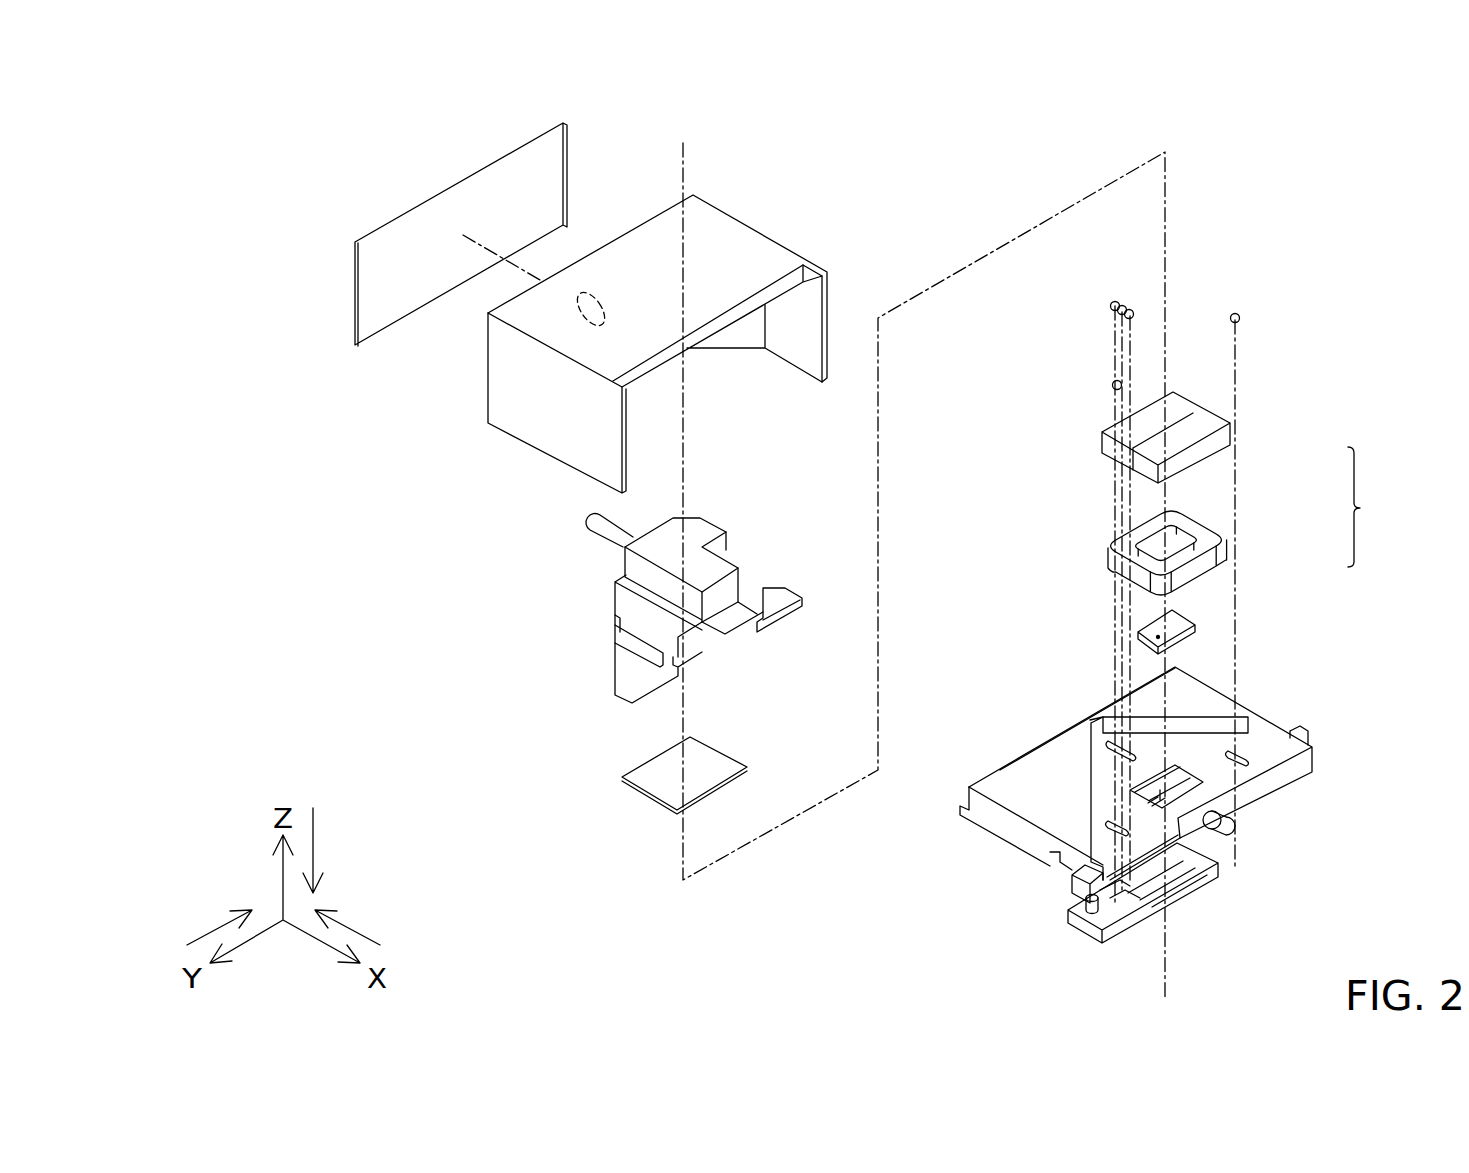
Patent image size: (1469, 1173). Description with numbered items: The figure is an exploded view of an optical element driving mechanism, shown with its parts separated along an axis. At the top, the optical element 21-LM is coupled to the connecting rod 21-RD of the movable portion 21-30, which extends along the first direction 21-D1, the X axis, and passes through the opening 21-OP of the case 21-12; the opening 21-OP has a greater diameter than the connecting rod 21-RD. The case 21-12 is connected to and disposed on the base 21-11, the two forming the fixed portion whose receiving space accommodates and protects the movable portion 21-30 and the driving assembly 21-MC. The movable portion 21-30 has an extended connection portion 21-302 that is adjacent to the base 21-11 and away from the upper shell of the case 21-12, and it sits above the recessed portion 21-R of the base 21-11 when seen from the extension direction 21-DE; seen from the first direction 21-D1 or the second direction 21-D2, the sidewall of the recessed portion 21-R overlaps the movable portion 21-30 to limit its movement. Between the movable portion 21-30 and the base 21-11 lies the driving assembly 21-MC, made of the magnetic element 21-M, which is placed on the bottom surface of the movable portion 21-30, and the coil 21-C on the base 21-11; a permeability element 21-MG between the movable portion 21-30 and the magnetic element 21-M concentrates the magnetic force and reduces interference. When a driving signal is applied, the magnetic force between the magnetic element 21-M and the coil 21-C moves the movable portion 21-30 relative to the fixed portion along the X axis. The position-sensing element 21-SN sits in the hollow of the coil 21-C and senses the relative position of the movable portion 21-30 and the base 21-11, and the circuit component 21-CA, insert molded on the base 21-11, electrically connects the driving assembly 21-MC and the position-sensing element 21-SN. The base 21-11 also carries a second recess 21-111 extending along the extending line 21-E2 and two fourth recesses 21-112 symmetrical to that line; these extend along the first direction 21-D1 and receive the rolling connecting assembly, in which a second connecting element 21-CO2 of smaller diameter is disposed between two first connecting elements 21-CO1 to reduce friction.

The optical element 21-LM is at (472, 208).
The opening 21-OP is at (572, 322).
The case 21-12 is at (542, 428).
The connecting rod 21-RD is at (603, 529).
The movable portion 21-30 is at (628, 672).
The extended connection portion 21-302 is at (780, 613).
The permeability element 21-MG is at (660, 780).
The first connecting element 21-CO1 is at (1111, 307).
The second connecting element 21-CO2 is at (1119, 314).
The magnetic element 21-M is at (1190, 458).
The driving assembly 21-MC is at (1404, 507).
The coil 21-C is at (1200, 551).
The position-sensing element 21-SN is at (1178, 639).
The extending line 21-E2 is at (1065, 717).
The second recess 21-111 is at (1110, 743).
The recessed portion 21-R is at (1092, 790).
The fourth recess 21-112 is at (1248, 763).
The base 21-11 is at (1240, 806).
The circuit component 21-CA is at (1107, 913).
The extension direction 21-DE is at (349, 836).
The first direction 21-D1 is at (391, 937).
The second direction 21-D2 is at (176, 937).